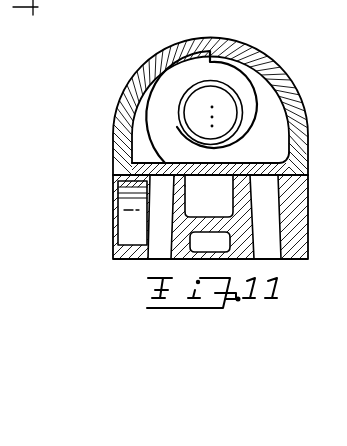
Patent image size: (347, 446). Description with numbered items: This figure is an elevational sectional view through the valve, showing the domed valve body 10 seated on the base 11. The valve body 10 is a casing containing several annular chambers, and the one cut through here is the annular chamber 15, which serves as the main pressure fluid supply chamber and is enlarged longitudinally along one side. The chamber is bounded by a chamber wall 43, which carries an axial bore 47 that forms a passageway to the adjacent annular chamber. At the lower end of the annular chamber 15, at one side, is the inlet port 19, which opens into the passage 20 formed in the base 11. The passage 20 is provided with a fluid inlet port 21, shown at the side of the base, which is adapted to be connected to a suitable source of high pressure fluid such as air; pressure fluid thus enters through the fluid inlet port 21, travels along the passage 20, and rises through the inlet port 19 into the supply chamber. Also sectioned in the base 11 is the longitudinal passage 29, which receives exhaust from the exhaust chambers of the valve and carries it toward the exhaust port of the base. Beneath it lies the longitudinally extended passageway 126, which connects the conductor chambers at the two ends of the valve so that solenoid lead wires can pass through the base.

The valve body 10 is at (299, 84).
The base 11 is at (309, 203).
The annular chamber 15 is at (263, 72).
The inlet port 19 is at (165, 166).
The passage 20 is at (172, 210).
The fluid inlet port 21 is at (128, 194).
The longitudinal passage 29 is at (188, 186).
The chamber wall 43 is at (283, 131).
The axial bore 47 is at (238, 109).
The longitudinally extended passageway 126 is at (191, 233).